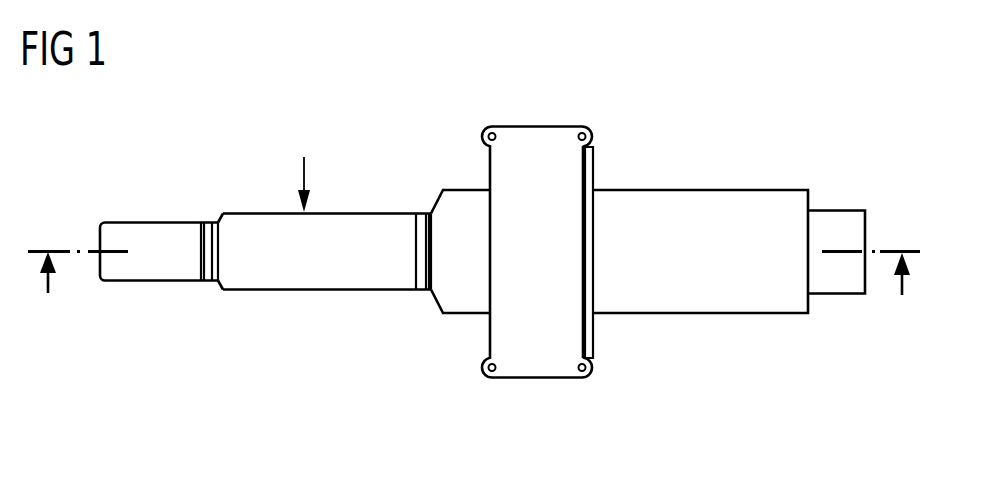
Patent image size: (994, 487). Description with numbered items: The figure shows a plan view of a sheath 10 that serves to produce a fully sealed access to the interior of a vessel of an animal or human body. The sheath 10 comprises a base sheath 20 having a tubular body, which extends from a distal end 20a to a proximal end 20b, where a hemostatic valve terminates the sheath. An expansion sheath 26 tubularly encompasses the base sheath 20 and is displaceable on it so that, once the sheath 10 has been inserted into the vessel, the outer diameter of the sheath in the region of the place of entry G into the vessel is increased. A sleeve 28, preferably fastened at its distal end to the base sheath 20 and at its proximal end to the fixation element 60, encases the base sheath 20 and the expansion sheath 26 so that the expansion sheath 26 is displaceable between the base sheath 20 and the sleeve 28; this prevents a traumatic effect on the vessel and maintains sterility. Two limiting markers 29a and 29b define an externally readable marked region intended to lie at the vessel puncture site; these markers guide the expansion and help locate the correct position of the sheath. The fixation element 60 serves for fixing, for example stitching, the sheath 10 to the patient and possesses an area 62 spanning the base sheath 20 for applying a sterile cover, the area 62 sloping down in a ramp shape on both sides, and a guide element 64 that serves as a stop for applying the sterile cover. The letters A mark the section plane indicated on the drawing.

The sheath 10 is at (792, 101).
The base sheath 20 is at (163, 228).
The distal end 20a is at (100, 230).
The proximal end 20b is at (836, 210).
The expansion sheath 26 is at (670, 190).
The sleeve 28 is at (272, 291).
The limiting marker 29a is at (205, 281).
The limiting marker 29b is at (422, 292).
The fixation element 60 is at (537, 379).
The area 62 is at (535, 141).
The guide element 64 is at (589, 340).
The place of entry G is at (305, 166).
The section line A- A is at (476, 276).